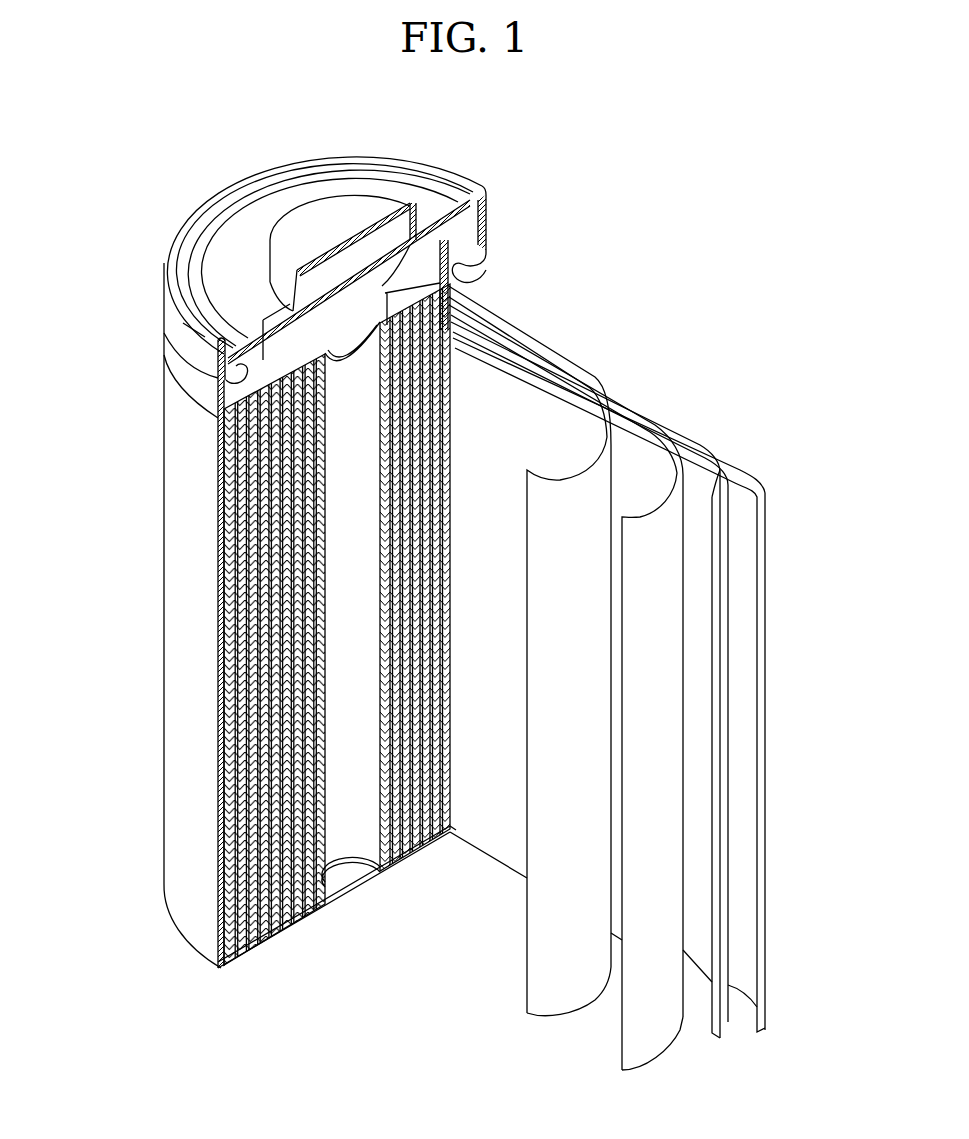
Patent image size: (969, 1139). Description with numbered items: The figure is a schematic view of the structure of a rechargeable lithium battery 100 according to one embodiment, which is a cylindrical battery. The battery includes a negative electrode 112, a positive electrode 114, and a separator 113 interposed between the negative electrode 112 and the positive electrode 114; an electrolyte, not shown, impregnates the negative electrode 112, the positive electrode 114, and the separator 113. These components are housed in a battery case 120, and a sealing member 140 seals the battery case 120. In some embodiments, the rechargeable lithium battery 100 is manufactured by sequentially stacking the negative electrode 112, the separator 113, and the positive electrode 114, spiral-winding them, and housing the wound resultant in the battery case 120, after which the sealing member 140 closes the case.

The rechargeable lithium battery 100 is at (489, 150).
The battery case 120 is at (182, 584).
The sealing member 140 is at (330, 217).
The negative electrode 112 is at (750, 452).
The separator 113 is at (523, 337).
The positive electrode 114 is at (594, 378).